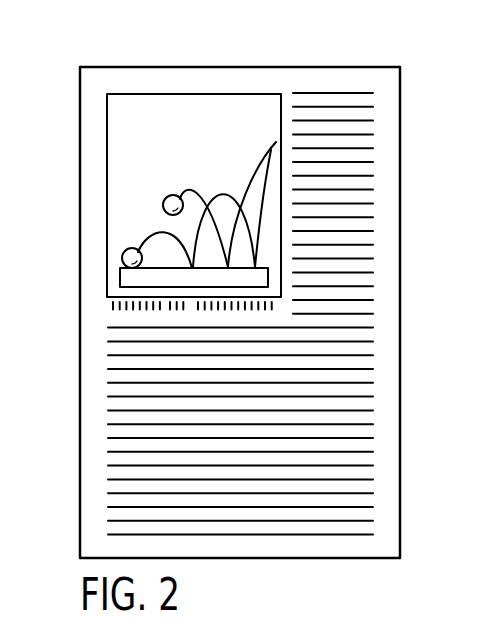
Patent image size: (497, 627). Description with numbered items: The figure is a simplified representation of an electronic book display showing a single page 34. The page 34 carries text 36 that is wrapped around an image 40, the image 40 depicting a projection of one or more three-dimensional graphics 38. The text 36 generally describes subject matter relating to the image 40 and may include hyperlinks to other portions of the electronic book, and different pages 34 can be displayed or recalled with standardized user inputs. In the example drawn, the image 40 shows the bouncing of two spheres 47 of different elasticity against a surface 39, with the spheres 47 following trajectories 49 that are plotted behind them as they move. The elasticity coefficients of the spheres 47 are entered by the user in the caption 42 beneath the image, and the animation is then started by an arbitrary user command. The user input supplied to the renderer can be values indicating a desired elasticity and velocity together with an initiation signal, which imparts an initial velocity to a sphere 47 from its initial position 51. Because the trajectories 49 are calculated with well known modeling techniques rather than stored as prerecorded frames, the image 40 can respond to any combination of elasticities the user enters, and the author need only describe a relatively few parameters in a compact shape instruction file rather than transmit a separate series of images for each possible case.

The page 34 is at (400, 67).
The text 36 is at (368, 178).
The three-dimensional graphics 38 is at (107, 133).
The image 40 is at (115, 172).
The surface 39 is at (120, 276).
The caption 42 is at (133, 307).
The spheres 47 is at (163, 207).
The trajectories 49 is at (248, 165).
The initial position 51 is at (281, 140).